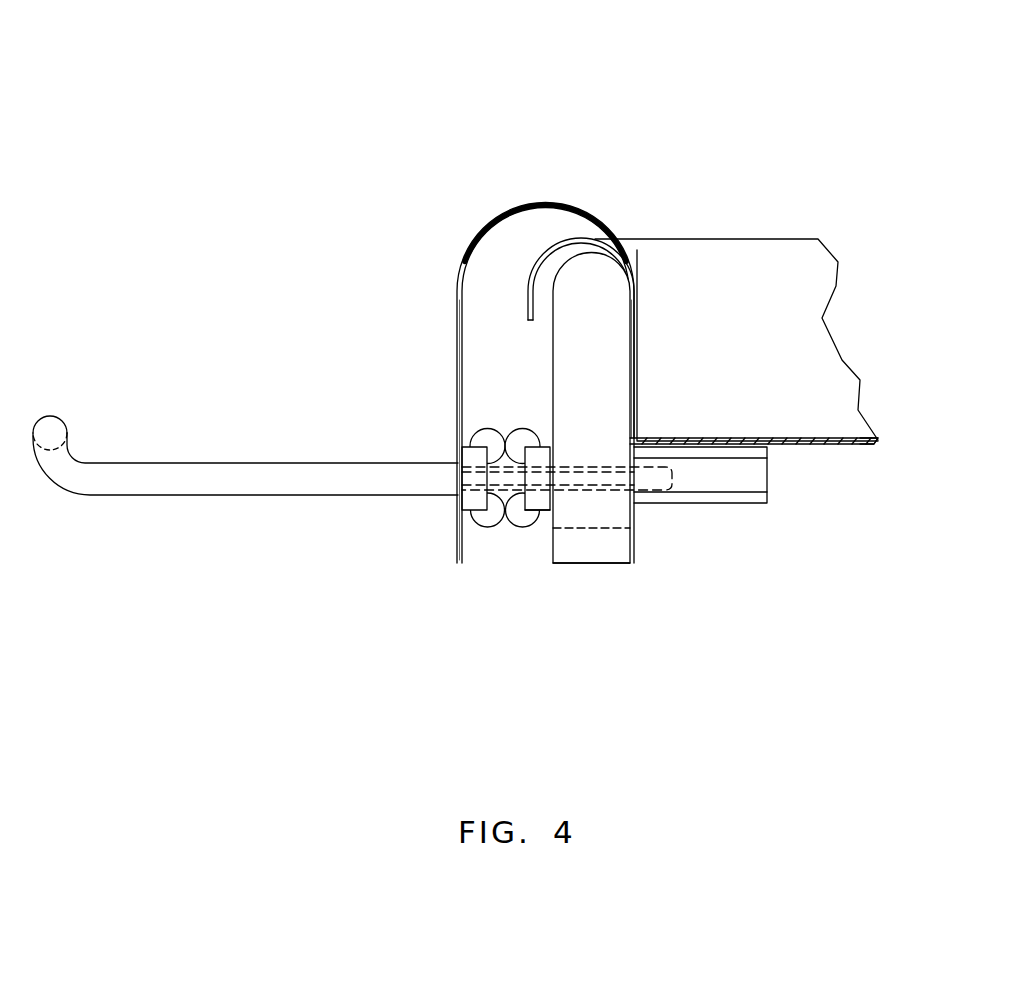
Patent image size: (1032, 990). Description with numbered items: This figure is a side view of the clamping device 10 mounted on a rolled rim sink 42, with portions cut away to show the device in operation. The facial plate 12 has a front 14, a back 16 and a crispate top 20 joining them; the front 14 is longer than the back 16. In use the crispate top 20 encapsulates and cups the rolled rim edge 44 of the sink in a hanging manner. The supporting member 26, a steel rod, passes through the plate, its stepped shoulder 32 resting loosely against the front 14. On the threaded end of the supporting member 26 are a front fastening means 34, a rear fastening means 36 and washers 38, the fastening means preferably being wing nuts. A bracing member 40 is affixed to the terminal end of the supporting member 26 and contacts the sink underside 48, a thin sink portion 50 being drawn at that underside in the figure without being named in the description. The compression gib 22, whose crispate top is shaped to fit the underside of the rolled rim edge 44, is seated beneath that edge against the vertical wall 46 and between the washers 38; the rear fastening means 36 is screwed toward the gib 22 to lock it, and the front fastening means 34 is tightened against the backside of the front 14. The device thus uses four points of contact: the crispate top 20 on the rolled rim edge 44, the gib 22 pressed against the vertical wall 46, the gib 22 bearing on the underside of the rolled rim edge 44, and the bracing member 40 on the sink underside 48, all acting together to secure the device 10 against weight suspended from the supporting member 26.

The clamping device 10 is at (500, 208).
The facial plate 12 is at (478, 241).
The front 14 is at (452, 332).
The back 16 is at (635, 355).
The crispate top 20 is at (557, 205).
The compression gib 22 is at (592, 300).
The supporting member 26 is at (147, 468).
The stepped shoulder 32 is at (457, 497).
The front fastening means 34 is at (473, 510).
The rear fastening means 36 is at (520, 523).
The washers 38 is at (551, 520).
The bracing member 40 is at (730, 498).
The rolled rim sink 42 is at (733, 258).
The rolled rim edge 44 is at (550, 245).
The vertical wall 46 is at (633, 313).
The sink underside 48 is at (827, 443).
The mounting plate 50 is at (728, 438).